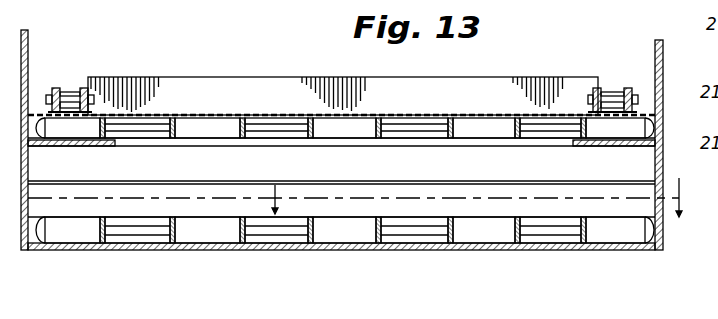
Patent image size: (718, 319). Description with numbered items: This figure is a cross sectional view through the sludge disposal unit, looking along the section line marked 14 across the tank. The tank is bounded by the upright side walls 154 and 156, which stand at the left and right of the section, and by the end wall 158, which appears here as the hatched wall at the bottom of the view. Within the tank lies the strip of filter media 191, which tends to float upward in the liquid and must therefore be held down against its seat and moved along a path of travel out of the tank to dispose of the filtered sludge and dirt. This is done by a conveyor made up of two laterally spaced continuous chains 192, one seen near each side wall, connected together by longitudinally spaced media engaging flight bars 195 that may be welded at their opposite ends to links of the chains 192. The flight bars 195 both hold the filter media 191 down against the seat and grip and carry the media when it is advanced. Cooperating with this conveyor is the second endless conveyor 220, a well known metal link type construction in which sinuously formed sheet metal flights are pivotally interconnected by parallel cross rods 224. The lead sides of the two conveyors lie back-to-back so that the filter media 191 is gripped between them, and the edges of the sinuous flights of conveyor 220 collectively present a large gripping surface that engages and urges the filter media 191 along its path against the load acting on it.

The upright side wall 154 is at (29, 57).
The upright side wall 156 is at (664, 62).
The end wall 158 is at (346, 251).
The strip of filter media 191 is at (211, 114).
The continuous chains 192 is at (65, 88).
The flight bars 195 is at (412, 77).
The second endless conveyor 220 is at (172, 121).
The cross rods 224 is at (418, 133).
The section line 14- 14 is at (371, 197).